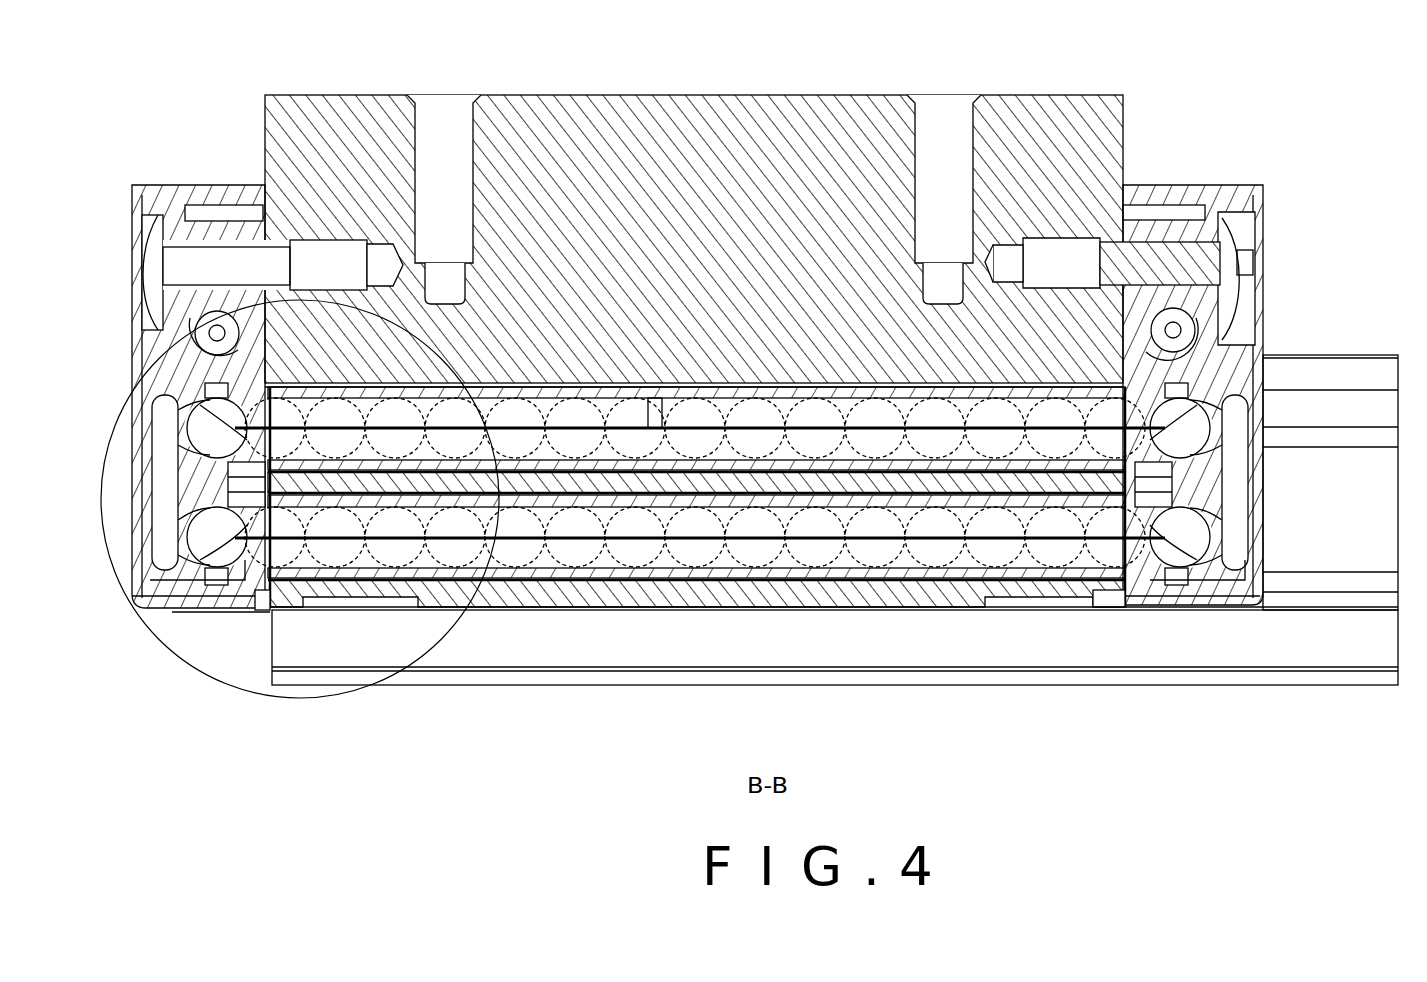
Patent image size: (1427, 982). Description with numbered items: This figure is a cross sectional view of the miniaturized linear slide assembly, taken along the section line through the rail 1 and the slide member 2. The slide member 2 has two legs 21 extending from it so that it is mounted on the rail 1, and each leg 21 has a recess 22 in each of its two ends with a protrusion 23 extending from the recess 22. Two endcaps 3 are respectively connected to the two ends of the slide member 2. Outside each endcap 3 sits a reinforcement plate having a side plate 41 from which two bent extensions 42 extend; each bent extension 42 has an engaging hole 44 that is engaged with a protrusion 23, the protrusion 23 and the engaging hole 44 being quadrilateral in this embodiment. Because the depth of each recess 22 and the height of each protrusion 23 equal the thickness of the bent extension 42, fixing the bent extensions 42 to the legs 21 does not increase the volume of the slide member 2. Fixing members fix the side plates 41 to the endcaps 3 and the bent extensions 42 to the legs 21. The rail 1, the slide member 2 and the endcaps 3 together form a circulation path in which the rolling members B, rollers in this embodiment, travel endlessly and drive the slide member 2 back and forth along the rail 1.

The rail 1 is at (565, 650).
The slide member 2 is at (620, 112).
The endcap 3 is at (222, 192).
The leg 21 is at (745, 612).
The recess 22 is at (415, 605).
The protrusion 23 is at (282, 600).
The side plate 41 is at (152, 430).
The bent extension 42 is at (235, 603).
The engaging hole 44 is at (265, 612).
The rolling member B is at (627, 575).